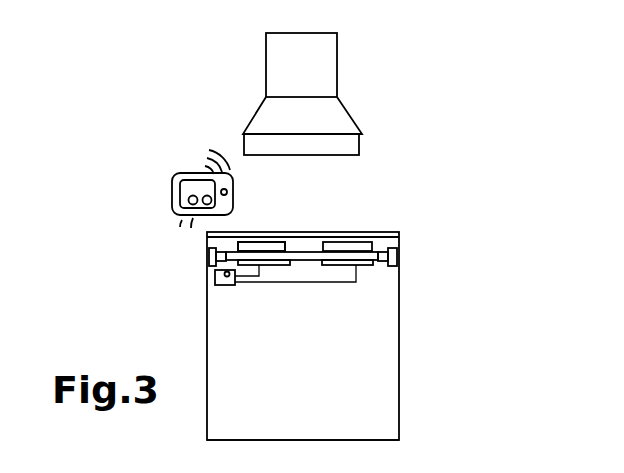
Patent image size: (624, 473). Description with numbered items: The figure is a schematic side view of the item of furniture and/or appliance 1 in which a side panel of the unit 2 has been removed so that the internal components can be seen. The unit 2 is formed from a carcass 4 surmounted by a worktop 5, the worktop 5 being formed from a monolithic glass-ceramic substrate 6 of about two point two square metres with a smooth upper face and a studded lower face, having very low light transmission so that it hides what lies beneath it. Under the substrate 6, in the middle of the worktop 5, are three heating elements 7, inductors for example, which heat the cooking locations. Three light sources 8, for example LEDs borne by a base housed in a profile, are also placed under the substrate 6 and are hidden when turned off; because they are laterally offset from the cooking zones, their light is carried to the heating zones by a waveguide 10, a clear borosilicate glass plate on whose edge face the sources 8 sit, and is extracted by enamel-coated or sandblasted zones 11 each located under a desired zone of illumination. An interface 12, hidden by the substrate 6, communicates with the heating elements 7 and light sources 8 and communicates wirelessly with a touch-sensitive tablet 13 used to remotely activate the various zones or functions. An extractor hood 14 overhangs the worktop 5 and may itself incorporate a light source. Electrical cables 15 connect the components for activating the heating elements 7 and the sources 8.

The item of furniture and/or appliance 1 is at (164, 120).
The unit 2 is at (402, 305).
The carcass 4 is at (383, 390).
The worktop 5 is at (364, 237).
The monolithic glass-ceramic substrate 6 is at (401, 233).
The heating elements 7 is at (270, 242).
The light sources 8 is at (208, 253).
The waveguide 10 is at (238, 242).
The enamel-coated or sandblasted zones 11 is at (332, 265).
The interface 12 is at (212, 280).
The touch-sensitive tablet 13 is at (173, 187).
The extractor hood 14 is at (322, 60).
The electrical cables 15 is at (345, 265).